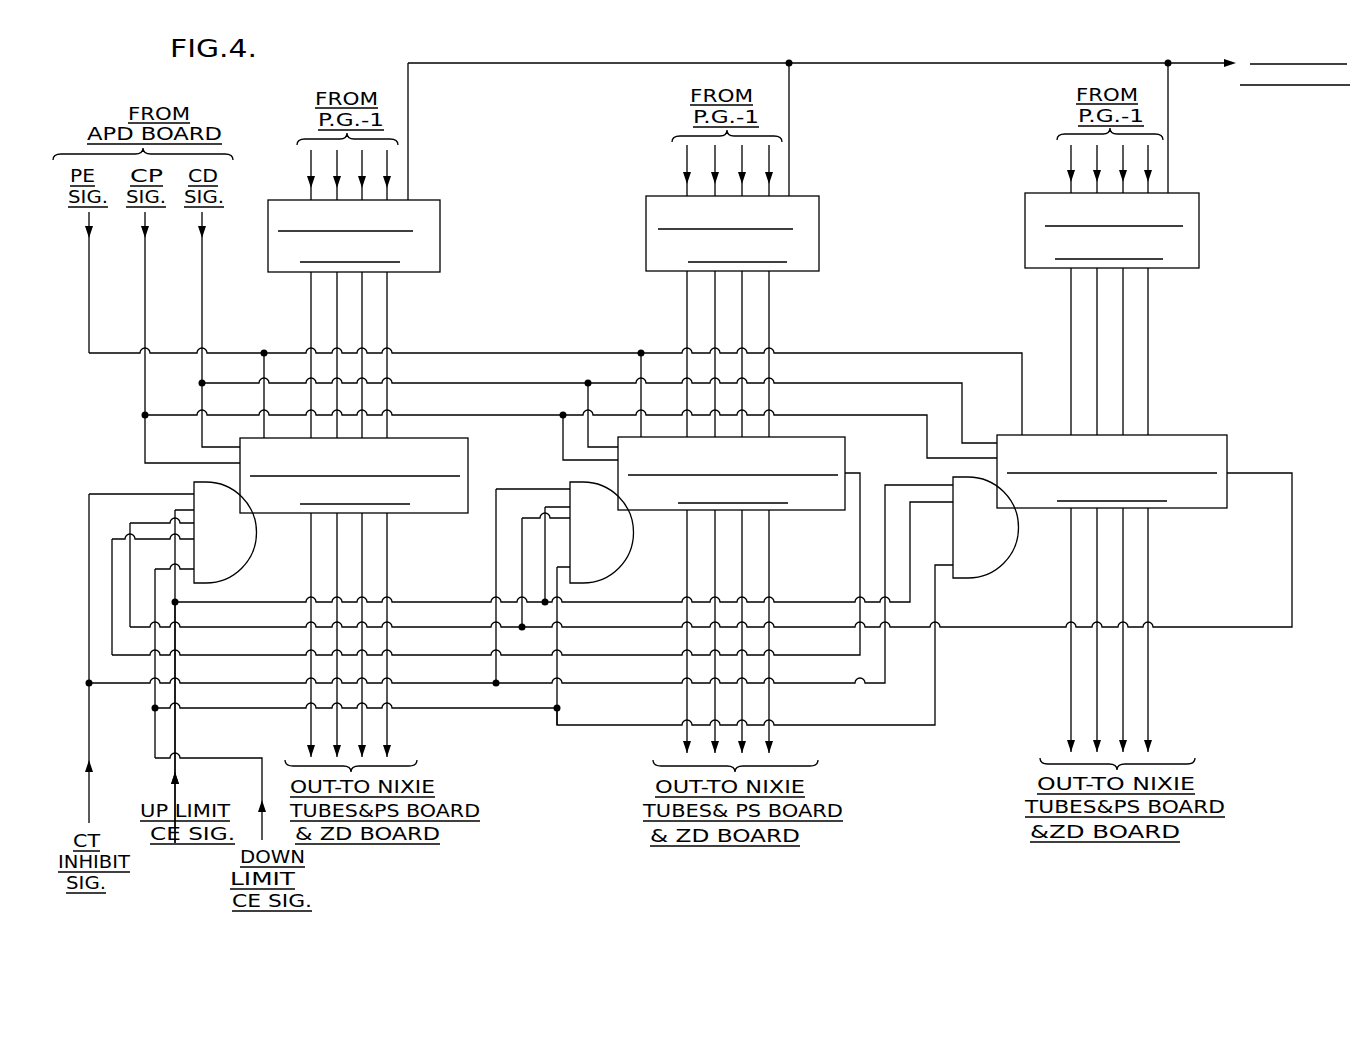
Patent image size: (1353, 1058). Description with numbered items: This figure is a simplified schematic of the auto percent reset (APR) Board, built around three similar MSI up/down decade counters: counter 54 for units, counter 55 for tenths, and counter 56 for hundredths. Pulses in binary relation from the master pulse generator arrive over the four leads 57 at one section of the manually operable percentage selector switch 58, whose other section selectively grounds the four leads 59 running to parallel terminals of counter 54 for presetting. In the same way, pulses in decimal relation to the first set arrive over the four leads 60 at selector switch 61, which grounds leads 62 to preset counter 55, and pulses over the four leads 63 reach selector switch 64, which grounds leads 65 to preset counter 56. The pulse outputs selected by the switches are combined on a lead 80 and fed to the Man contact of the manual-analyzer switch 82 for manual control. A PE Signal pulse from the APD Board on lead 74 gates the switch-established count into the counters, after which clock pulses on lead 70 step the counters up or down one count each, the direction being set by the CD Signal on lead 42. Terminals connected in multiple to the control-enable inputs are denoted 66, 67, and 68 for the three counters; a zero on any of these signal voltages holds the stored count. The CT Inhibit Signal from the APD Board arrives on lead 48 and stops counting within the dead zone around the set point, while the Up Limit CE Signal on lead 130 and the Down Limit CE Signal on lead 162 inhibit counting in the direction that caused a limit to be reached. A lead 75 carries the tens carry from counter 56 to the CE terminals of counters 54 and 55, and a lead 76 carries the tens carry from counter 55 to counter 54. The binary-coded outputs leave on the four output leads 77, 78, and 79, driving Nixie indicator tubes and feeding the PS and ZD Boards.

The lead 80 is at (923, 63).
The manual-analyzer switch 82 is at (1295, 64).
The lead 74 is at (89, 308).
The lead 70 is at (145, 290).
The lead 42 is at (202, 292).
The four leads 57 is at (337, 158).
The percentage selector switch 58 is at (440, 241).
The four leads 59 is at (337, 306).
The four leads 60 is at (715, 156).
The percentage selector switch 61 is at (819, 237).
The four leads 62 is at (715, 307).
The four leads 63 is at (1148, 170).
The percentage selector switch 64 is at (1199, 222).
The four leads 65 is at (1097, 302).
The up/down decade counter 54 is at (468, 452).
The up/down decade counter 55 is at (845, 451).
The up/down decade counter 56 is at (1210, 435).
The multipled CE terminals 66 is at (250, 549).
The multipled CE terminals 67 is at (634, 543).
The multipled CE terminals 68 is at (1018, 548).
The four output leads 77 is at (337, 558).
The four output leads 78 is at (718, 524).
The four output leads 79 is at (1097, 545).
The lead 75 is at (468, 624).
The lead 76 is at (246, 652).
The lead 48 is at (89, 710).
The output lead 130 is at (173, 767).
The output lead 162 is at (260, 783).